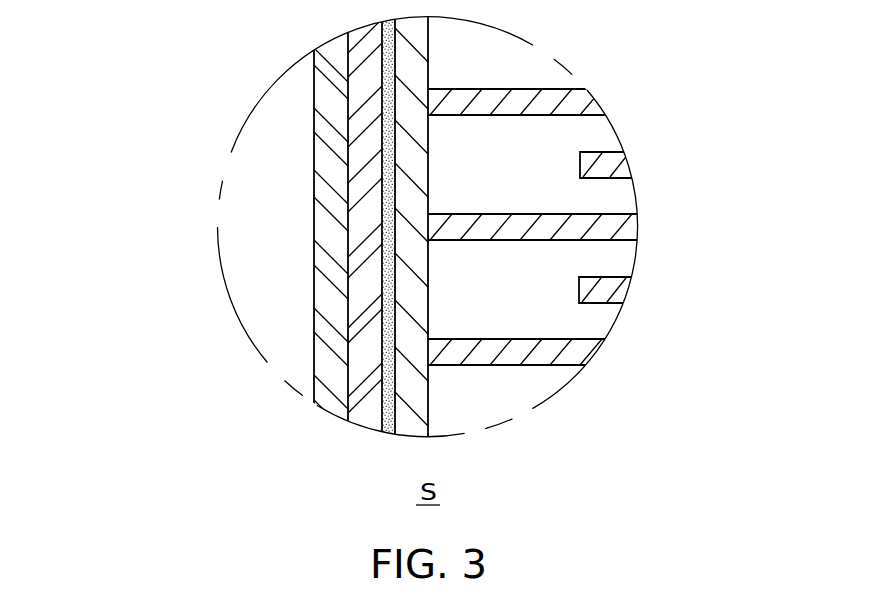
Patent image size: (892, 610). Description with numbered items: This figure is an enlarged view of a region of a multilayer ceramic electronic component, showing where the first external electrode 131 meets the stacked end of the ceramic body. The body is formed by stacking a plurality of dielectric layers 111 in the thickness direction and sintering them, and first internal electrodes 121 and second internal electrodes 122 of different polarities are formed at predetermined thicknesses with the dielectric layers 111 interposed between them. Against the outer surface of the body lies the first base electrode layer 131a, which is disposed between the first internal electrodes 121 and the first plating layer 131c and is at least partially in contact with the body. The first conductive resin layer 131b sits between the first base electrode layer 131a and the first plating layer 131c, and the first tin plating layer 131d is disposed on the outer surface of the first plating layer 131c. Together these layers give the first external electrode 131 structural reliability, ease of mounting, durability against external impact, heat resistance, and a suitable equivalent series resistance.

The first external electrode 131 is at (110, 142).
The first base electrode layer 131a is at (410, 337).
The first conductive resin layer 131b is at (388, 273).
The first plating layer 131c is at (363, 218).
The first tin plating layer 131d is at (323, 158).
The first internal electrode 121 is at (613, 226).
The second internal electrode 122 is at (607, 290).
The dielectric layer 111 is at (607, 258).